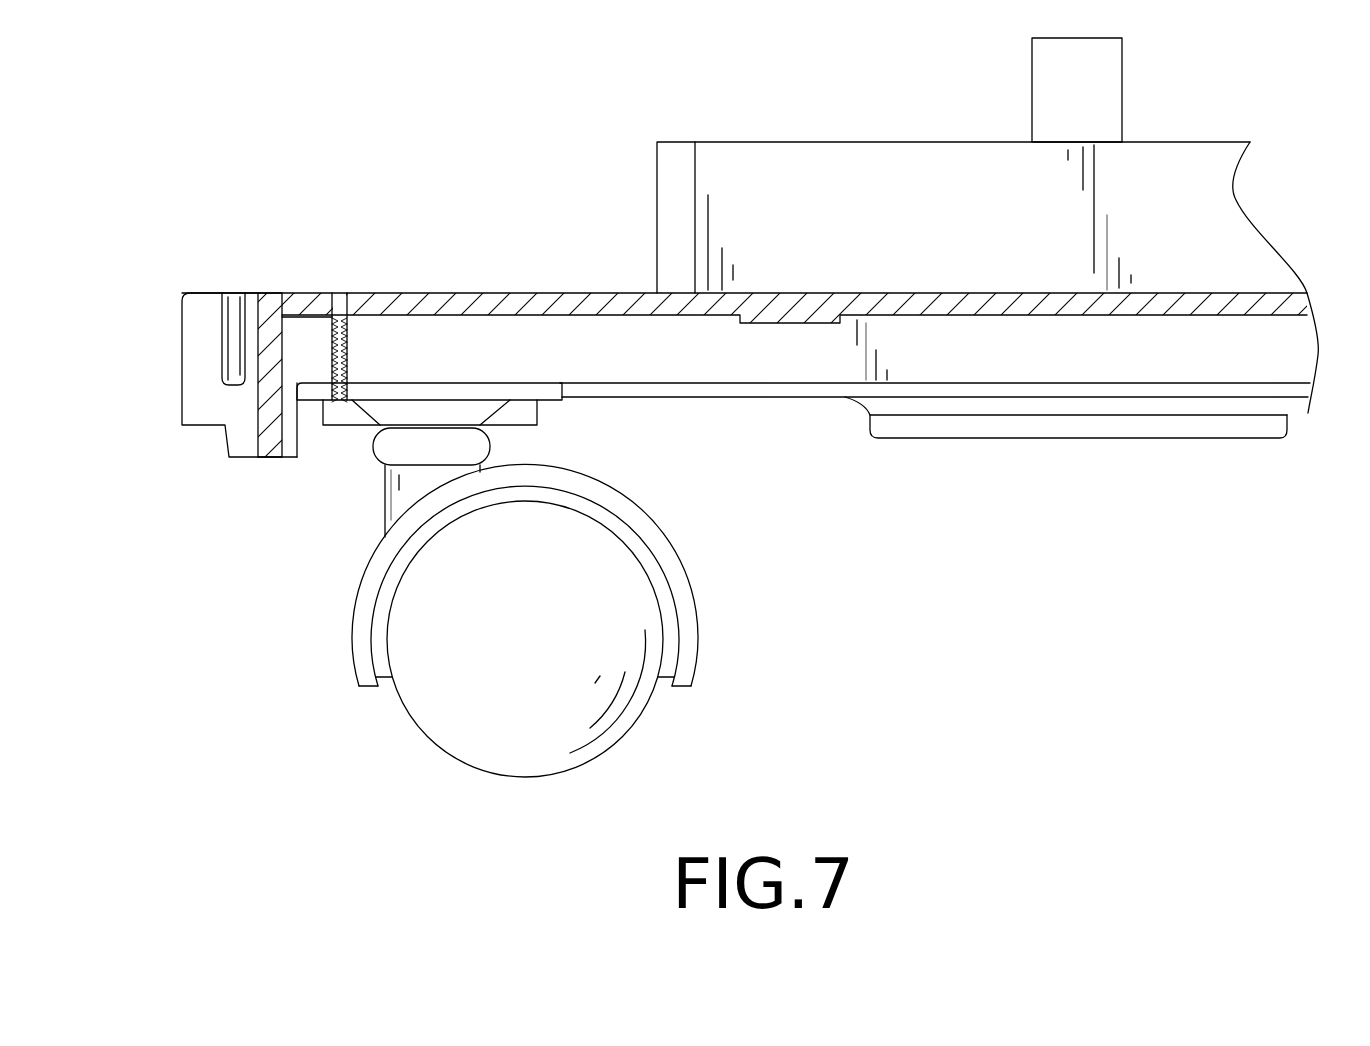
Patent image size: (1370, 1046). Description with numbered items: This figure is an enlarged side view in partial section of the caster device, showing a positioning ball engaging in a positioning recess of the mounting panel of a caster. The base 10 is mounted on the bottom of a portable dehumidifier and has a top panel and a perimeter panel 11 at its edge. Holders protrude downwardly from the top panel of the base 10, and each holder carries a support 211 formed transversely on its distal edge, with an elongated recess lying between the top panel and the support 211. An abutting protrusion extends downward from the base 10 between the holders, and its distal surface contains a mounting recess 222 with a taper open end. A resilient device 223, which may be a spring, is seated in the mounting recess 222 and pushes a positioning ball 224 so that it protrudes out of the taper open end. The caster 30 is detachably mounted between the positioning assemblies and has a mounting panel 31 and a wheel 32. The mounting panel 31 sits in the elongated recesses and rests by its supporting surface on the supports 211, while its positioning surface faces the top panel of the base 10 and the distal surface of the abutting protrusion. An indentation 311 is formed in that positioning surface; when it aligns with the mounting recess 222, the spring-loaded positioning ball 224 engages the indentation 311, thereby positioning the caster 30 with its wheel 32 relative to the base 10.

The base 10 is at (625, 302).
The perimeter panel 11 is at (268, 387).
The mounting recess 222 is at (322, 307).
The resilient device 223 is at (355, 340).
The positioning ball 224 is at (347, 368).
The mounting panel 31 is at (552, 392).
The indentation 311 is at (343, 402).
The support 211 is at (523, 418).
The caster 30 is at (396, 736).
The wheel 32 is at (622, 703).